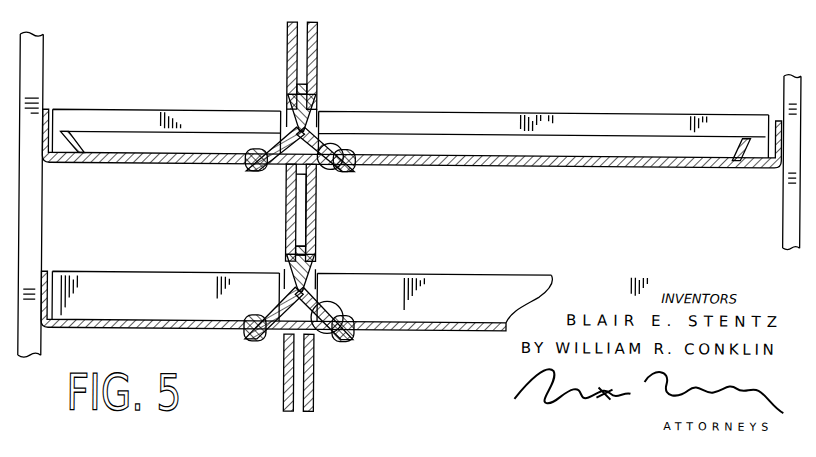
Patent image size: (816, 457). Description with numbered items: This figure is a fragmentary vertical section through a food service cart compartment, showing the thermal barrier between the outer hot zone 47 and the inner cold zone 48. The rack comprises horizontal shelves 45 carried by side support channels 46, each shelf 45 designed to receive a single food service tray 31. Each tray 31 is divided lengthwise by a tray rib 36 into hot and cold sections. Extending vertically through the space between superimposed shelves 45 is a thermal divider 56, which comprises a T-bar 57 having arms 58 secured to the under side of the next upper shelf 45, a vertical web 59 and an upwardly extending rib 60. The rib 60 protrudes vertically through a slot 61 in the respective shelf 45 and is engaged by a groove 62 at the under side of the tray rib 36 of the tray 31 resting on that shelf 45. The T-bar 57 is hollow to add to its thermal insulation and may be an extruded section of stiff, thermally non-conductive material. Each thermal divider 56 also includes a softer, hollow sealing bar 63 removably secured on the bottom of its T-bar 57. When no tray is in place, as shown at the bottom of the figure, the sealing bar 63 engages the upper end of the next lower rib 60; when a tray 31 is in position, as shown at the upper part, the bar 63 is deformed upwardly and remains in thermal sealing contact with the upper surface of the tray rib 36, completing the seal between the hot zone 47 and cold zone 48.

The food service tray 31 is at (580, 157).
The tray rib 36 is at (284, 133).
The horizontal shelf 45 is at (65, 166).
The side support channel 46 is at (43, 72).
The outer hot zone 47 is at (540, 233).
The inner cold zone 48 is at (200, 240).
The thermal divider 56 is at (318, 242).
The T-bar 57 is at (303, 217).
The arm 58 is at (252, 170).
The vertical web 59 is at (286, 207).
The rib 60 is at (341, 150).
The slot 61 is at (330, 152).
The groove 62 is at (277, 150).
The sealing bar 63 is at (311, 112).